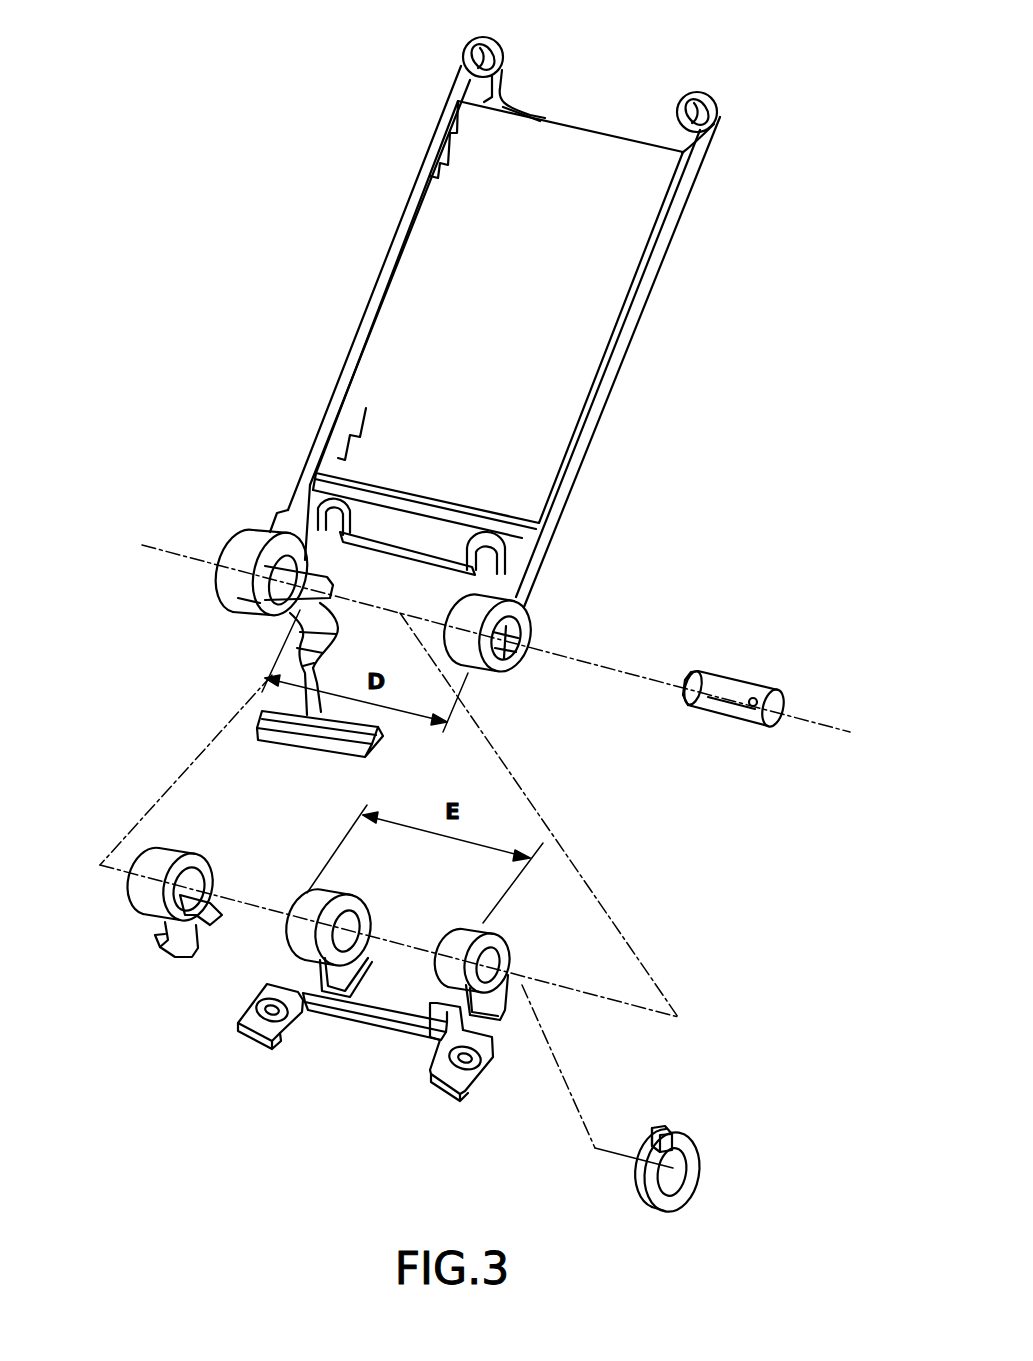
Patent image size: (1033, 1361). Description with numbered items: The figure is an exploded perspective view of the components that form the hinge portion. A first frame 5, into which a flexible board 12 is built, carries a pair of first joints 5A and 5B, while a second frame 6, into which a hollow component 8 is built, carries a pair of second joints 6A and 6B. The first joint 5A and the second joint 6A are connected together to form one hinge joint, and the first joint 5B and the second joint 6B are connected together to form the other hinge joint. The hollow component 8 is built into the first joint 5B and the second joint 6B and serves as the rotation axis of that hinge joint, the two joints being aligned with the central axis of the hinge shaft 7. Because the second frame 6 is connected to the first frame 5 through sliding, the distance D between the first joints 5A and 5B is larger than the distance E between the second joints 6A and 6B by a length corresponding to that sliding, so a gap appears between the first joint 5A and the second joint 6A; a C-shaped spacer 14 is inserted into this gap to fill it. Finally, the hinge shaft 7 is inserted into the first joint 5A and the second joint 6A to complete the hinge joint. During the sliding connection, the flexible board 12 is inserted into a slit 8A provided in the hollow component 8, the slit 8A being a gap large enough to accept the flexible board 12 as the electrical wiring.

The first frame 5 is at (293, 493).
The first joint 5A is at (500, 593).
The first joint 5B is at (230, 537).
The second frame 6 is at (240, 1025).
The second joint 6A is at (460, 933).
The second joint 6B is at (327, 887).
The hinge shaft 7 is at (755, 682).
The hollow component 8 is at (133, 888).
The slit 8A is at (207, 923).
The flexible board 12 is at (317, 743).
The C-shaped spacer 14 is at (692, 1150).